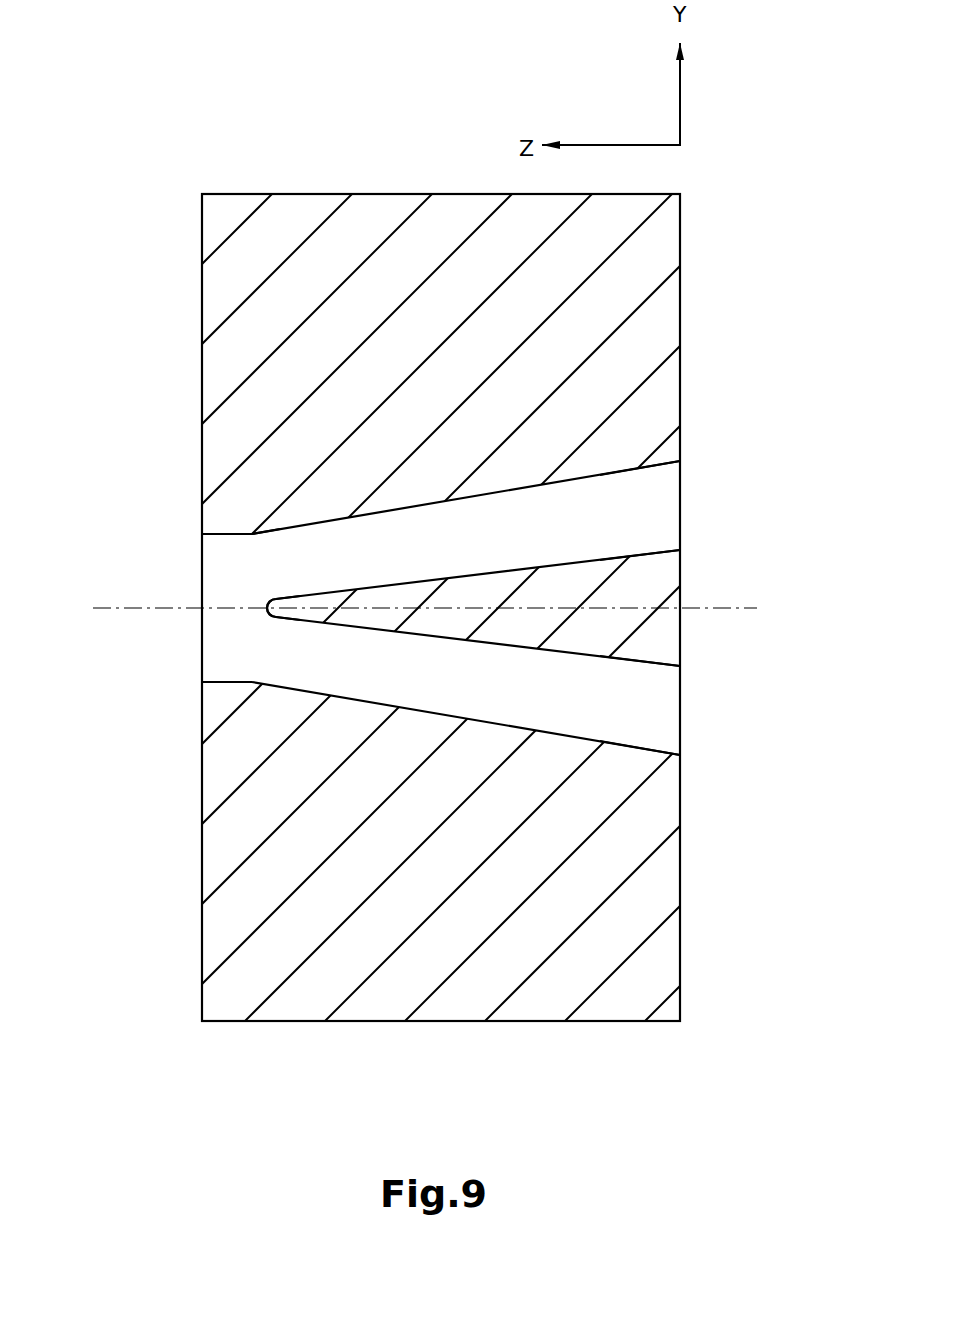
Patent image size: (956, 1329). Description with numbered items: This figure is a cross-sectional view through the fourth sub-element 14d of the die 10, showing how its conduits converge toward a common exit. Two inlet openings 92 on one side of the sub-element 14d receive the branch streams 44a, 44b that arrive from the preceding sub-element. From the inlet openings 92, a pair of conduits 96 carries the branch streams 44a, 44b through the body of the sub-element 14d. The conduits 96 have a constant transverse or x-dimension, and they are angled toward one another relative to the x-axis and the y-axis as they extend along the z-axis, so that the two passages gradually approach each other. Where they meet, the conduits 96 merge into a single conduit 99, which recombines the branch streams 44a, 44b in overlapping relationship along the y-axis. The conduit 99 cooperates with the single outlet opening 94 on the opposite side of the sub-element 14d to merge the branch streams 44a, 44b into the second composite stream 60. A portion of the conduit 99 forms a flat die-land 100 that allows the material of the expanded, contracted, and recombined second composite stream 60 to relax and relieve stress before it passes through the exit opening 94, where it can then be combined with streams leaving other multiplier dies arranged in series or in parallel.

The die 10 is at (305, 1077).
The fourth sub-element 14d is at (265, 1021).
The branch stream 44a is at (680, 514).
The branch stream 44b is at (680, 700).
The second composite stream 60 is at (122, 612).
The inlet opening 92 is at (683, 493).
The outlet opening 94 is at (187, 563).
The conduit 96 is at (512, 530).
The conduit 99 is at (232, 633).
The flat die-land 100 is at (225, 533).